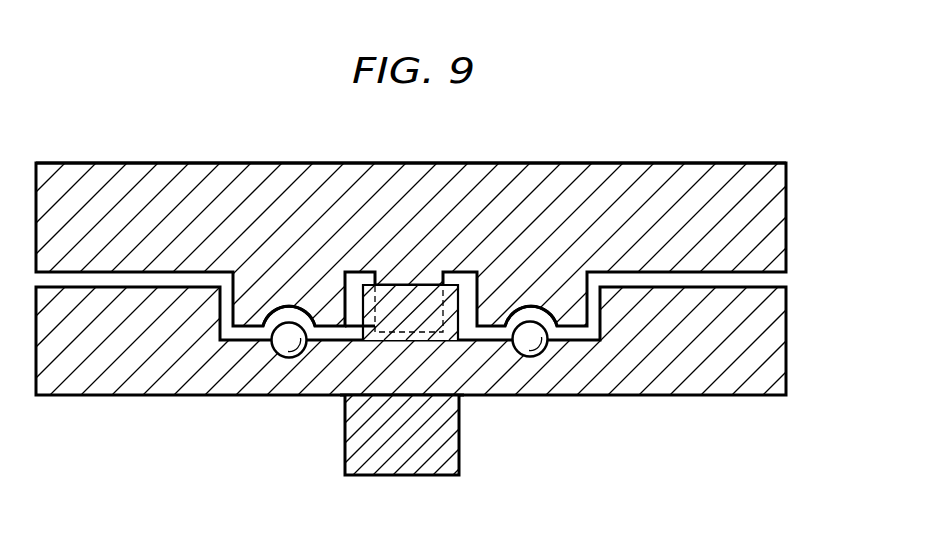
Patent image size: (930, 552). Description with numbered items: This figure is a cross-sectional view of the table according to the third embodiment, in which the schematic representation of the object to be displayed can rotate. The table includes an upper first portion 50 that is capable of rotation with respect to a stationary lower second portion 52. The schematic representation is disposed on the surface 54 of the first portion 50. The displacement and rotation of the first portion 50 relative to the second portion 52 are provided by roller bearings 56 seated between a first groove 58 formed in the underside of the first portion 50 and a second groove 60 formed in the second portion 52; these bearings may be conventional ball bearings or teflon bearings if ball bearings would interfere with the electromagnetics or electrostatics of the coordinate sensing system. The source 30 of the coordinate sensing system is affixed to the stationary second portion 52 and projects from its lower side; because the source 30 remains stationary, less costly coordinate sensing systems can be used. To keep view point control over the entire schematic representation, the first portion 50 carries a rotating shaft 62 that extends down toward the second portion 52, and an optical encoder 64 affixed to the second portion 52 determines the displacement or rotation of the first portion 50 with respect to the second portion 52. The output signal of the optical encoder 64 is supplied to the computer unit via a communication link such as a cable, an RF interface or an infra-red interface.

The source 30 is at (402, 463).
The first portion 50 is at (786, 233).
The second portion 52 is at (786, 328).
The surface 54 is at (680, 163).
The roller bearings 56 is at (284, 358).
The first groove 58 is at (289, 307).
The second groove 60 is at (270, 350).
The rotating shaft 62 is at (408, 284).
The optical encoder 64 is at (351, 328).